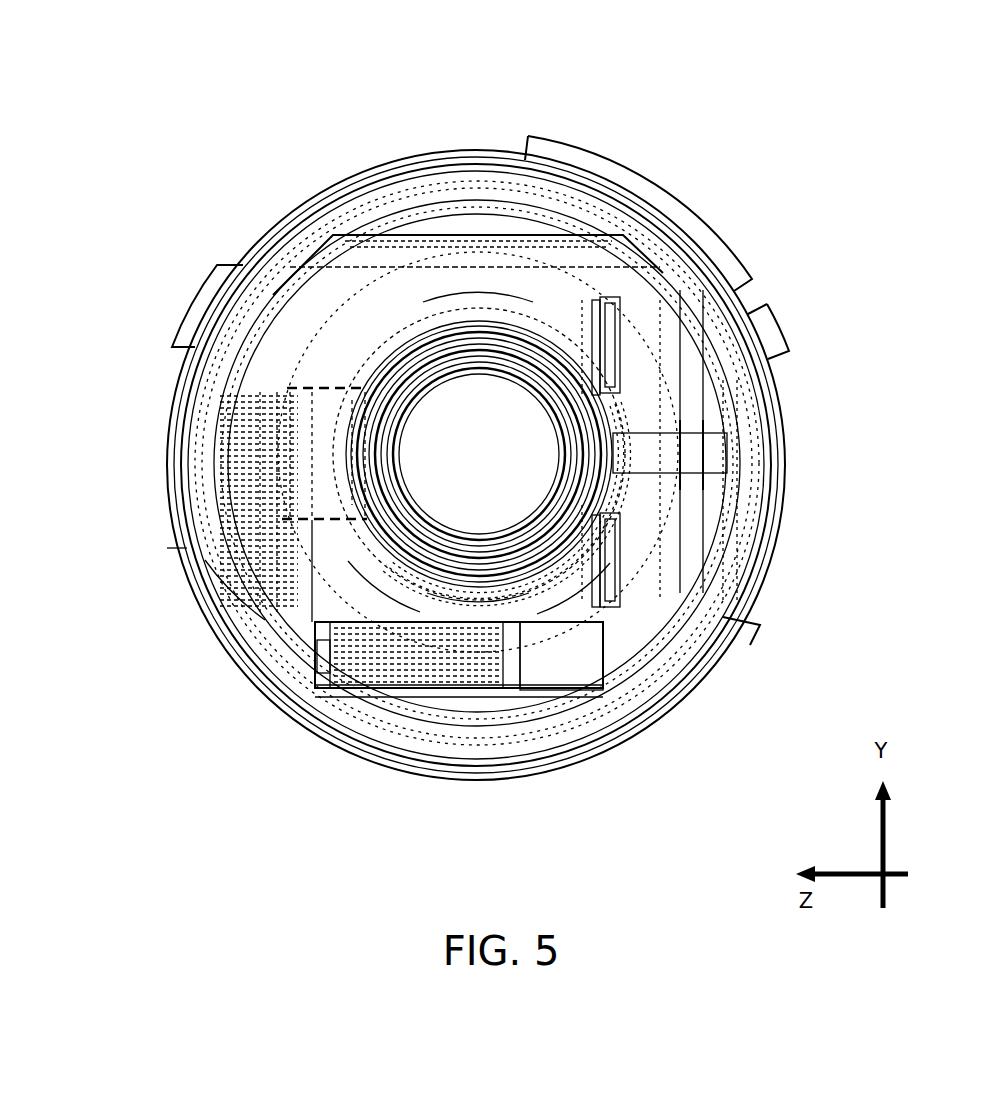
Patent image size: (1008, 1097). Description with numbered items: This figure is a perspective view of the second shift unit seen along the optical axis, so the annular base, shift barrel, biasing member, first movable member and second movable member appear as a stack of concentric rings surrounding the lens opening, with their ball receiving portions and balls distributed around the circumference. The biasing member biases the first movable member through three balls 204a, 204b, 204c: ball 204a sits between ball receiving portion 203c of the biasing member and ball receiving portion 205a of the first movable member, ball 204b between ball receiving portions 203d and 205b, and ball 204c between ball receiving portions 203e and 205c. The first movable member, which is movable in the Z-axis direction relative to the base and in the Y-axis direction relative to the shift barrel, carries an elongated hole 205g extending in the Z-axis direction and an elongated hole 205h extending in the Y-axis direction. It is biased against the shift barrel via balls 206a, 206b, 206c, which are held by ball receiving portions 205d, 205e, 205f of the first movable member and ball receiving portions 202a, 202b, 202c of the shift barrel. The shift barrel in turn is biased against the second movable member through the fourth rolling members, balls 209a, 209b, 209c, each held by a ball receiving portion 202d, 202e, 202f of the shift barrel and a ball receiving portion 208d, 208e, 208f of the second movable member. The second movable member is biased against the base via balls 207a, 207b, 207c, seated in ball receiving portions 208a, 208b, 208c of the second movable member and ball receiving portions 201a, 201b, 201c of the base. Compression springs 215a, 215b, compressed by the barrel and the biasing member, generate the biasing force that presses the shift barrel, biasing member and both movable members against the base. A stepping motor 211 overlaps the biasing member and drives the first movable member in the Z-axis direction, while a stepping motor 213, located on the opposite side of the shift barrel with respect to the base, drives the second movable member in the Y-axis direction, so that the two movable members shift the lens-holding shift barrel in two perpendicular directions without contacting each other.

The ball receiving portion 201a is at (600, 350).
The ball receiving portion 201b is at (600, 555).
The ball receiving portion 201c is at (360, 453).
The ball receiving portion 202a is at (600, 565).
The ball receiving portion 202b is at (600, 350).
The ball receiving portion 202c is at (355, 455).
The ball receiving portion 202d is at (744, 415).
The ball receiving portion 202e is at (244, 242).
The ball receiving portion 202f is at (248, 665).
The ball receiving portion 203c is at (333, 718).
The ball receiving portion 203d is at (614, 718).
The ball receiving portion 203e is at (408, 157).
The ball 204a is at (333, 718).
The ball 204b is at (614, 718).
The ball 204c is at (408, 157).
The ball receiving portion 205a is at (388, 597).
The ball receiving portion 205b is at (567, 600).
The ball receiving portion 205c is at (477, 307).
The ball receiving portion 205d is at (729, 593).
The ball receiving portion 205e is at (716, 267).
The ball receiving portion 205f is at (181, 406).
The elongated hole 205g is at (568, 337).
The elongated hole 205h is at (454, 600).
The ball 206a is at (729, 593).
The ball 206b is at (716, 267).
The ball 206c is at (181, 406).
The ball 207a is at (733, 322).
The ball 207b is at (738, 555).
The ball 207c is at (206, 475).
The ball receiving portion 208a is at (733, 322).
The ball receiving portion 208b is at (738, 555).
The ball receiving portion 208c is at (206, 475).
The ball receiving portion 208d is at (632, 453).
The ball receiving portion 208e is at (323, 385).
The ball receiving portion 208f is at (322, 519).
The ball 209a is at (744, 415).
The ball 209b is at (244, 242).
The ball 209c is at (248, 665).
The stepping motor 211 is at (555, 683).
The stepping motor 213 is at (324, 483).
The compression spring 215a is at (247, 588).
The compression spring 215b is at (697, 458).